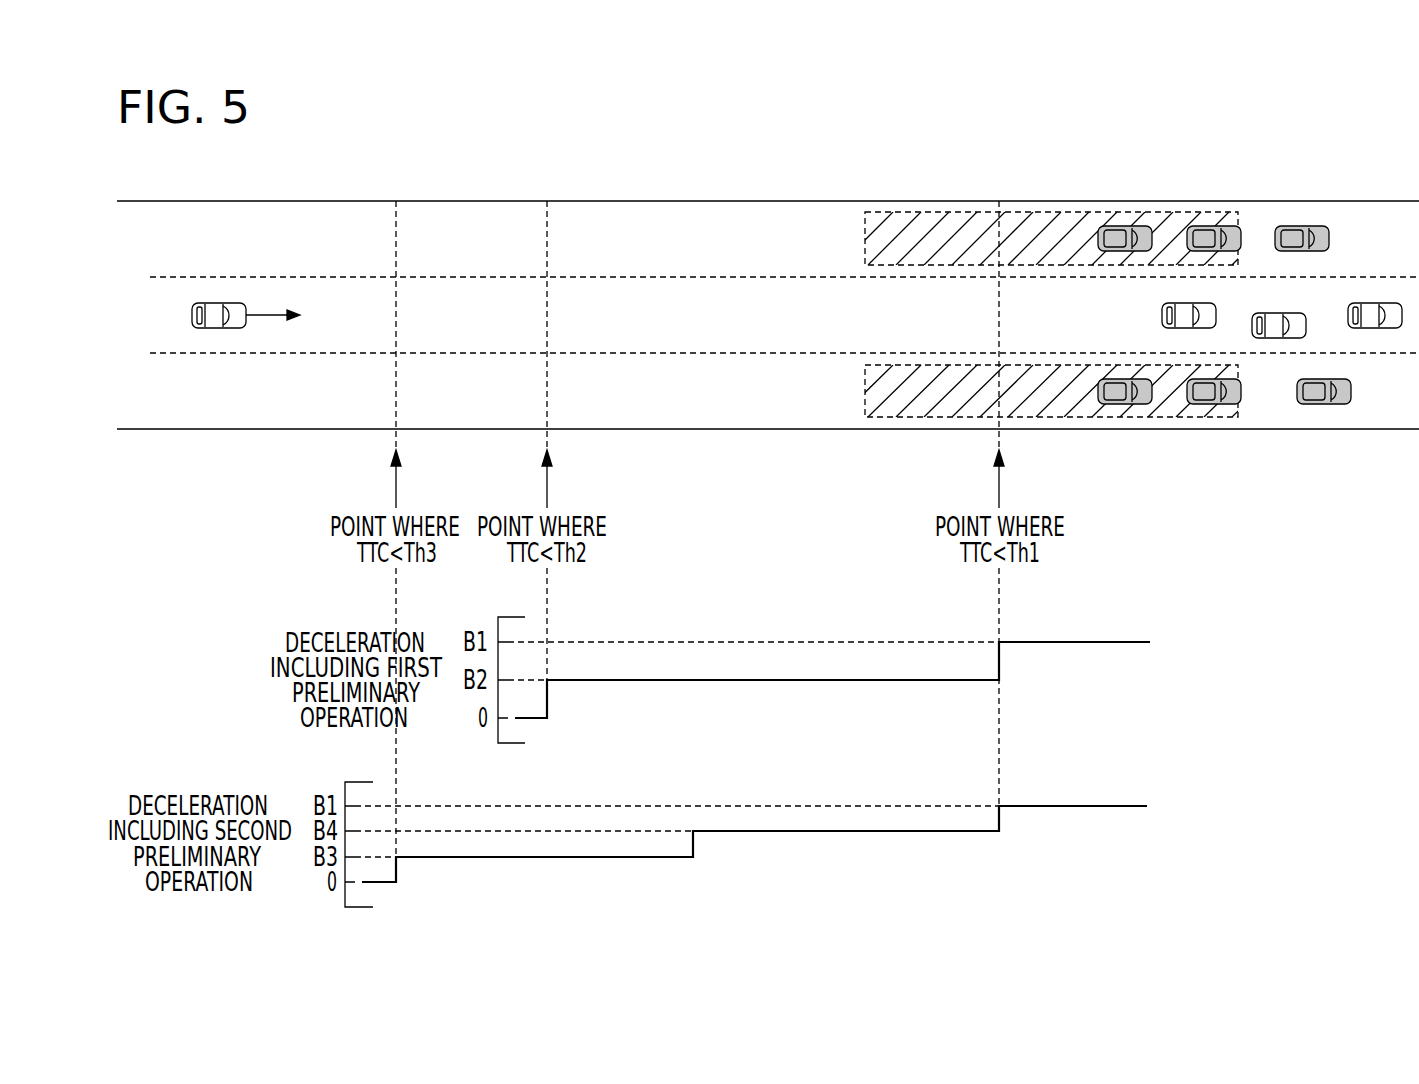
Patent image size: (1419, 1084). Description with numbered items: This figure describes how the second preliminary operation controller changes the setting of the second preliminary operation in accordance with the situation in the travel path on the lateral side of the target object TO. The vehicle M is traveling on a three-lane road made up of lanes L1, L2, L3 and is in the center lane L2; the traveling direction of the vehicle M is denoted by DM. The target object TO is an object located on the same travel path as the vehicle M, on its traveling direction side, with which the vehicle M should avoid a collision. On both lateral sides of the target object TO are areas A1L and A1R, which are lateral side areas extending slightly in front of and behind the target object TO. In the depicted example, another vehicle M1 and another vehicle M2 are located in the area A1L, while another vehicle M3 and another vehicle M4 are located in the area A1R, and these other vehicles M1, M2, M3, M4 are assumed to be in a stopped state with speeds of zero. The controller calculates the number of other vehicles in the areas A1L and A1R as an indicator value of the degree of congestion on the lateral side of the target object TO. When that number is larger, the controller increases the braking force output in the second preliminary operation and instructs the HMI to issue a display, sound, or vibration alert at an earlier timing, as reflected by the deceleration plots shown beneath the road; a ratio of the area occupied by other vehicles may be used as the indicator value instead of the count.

The lane L1 is at (144, 253).
The lane L2 is at (144, 330).
The lane L3 is at (144, 407).
The vehicle M is at (215, 303).
The traveling direction DM is at (268, 314).
The area A1L is at (925, 222).
The area A1R is at (925, 418).
The other vehicle M1 is at (1120, 225).
The other vehicle M2 is at (1222, 225).
The other vehicle M3 is at (1120, 404).
The other vehicle M4 is at (1215, 404).
The target object TO is at (1170, 303).